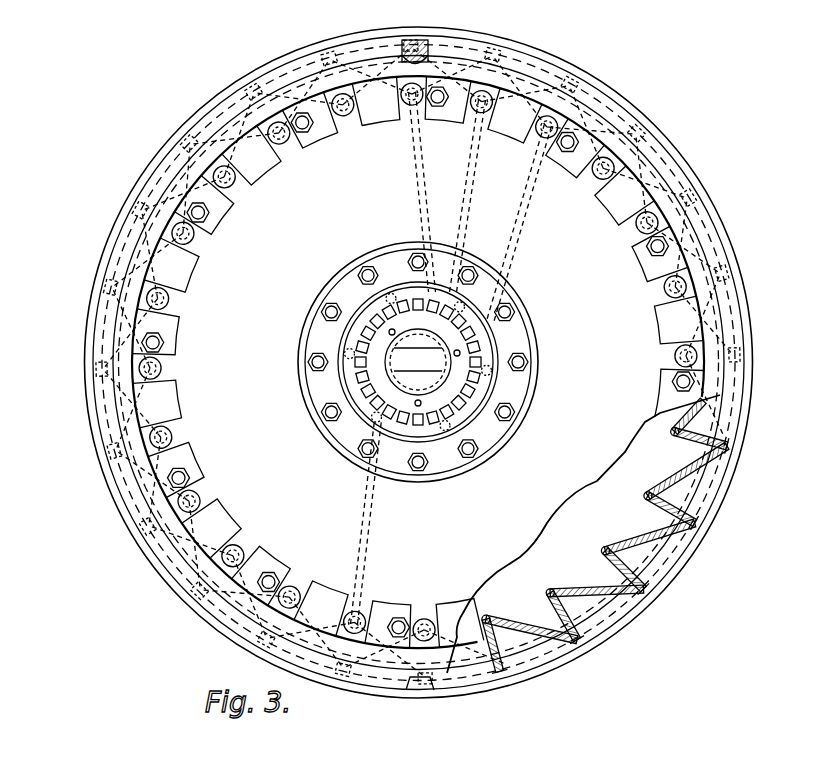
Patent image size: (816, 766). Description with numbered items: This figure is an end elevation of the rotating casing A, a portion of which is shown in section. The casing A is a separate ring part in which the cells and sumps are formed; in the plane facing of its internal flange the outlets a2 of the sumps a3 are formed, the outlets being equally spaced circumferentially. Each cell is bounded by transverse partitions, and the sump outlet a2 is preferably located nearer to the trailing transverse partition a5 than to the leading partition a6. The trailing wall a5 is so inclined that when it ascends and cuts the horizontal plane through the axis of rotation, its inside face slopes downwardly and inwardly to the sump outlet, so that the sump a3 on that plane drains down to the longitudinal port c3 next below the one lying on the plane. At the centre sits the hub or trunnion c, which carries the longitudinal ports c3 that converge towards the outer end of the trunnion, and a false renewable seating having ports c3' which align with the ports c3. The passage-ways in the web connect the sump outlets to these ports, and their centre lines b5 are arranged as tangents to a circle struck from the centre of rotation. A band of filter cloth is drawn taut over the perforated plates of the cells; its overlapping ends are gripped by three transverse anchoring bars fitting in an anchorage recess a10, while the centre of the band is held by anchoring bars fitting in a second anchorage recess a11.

The rotating casing A is at (603, 617).
The anchorage recess a10 is at (438, 43).
The anchorage recess a11 is at (420, 684).
The sump outlet a2 is at (222, 228).
The sump a3 is at (693, 282).
The trailing transverse partition a5 is at (342, 112).
The leading partition a6 is at (590, 160).
The centre lines of the passage-ways b5 is at (460, 190).
The hub or trunnion c is at (458, 477).
The longitudinal ports c3 is at (418, 392).
The ports of false renewable seating c3' is at (467, 362).